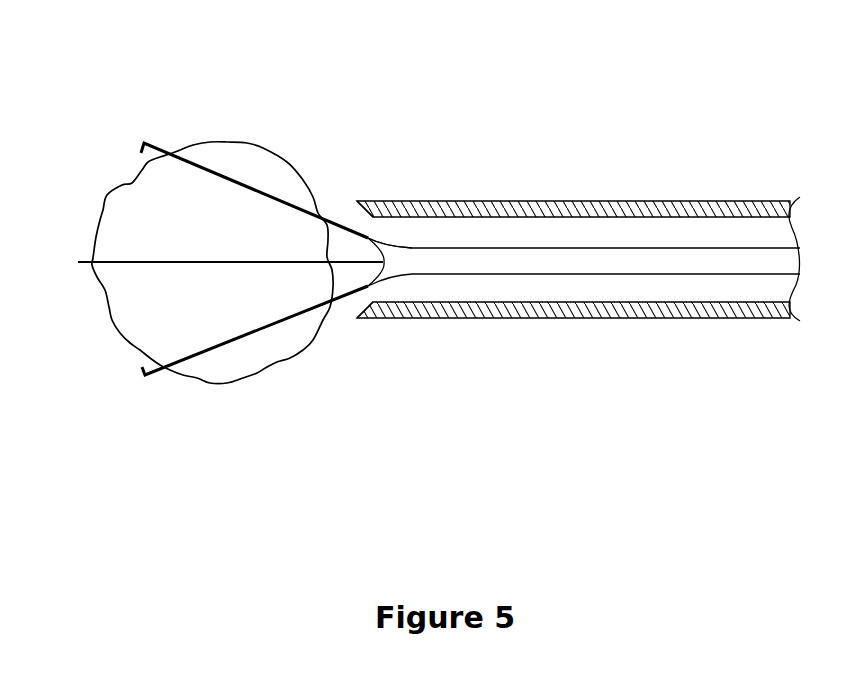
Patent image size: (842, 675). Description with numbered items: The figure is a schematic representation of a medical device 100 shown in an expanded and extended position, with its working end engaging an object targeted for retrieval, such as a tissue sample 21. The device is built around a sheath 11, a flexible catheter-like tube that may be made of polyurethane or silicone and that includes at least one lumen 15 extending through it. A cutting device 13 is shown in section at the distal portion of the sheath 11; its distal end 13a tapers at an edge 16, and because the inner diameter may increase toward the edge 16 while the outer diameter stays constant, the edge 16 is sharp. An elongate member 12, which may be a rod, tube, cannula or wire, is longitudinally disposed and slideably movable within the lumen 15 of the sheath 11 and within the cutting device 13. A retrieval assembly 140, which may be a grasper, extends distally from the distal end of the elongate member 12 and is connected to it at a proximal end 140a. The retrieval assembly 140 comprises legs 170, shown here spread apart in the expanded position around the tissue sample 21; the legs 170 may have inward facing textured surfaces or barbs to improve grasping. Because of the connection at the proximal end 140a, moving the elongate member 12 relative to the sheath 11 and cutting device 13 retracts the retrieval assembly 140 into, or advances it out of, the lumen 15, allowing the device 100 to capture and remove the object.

The sheath 11 is at (578, 250).
The elongate member 12 is at (535, 248).
The cutting device 13 is at (457, 202).
The distal end of cutting device 13a is at (358, 318).
The lumen 15 is at (603, 288).
The edge 16 is at (357, 201).
The tissue sample 21 is at (212, 140).
The medical device 100 is at (262, 445).
The retrieval assembly 140 is at (230, 236).
The proximal end of retrieval assembly 140a is at (400, 277).
The legs 170 is at (258, 190).